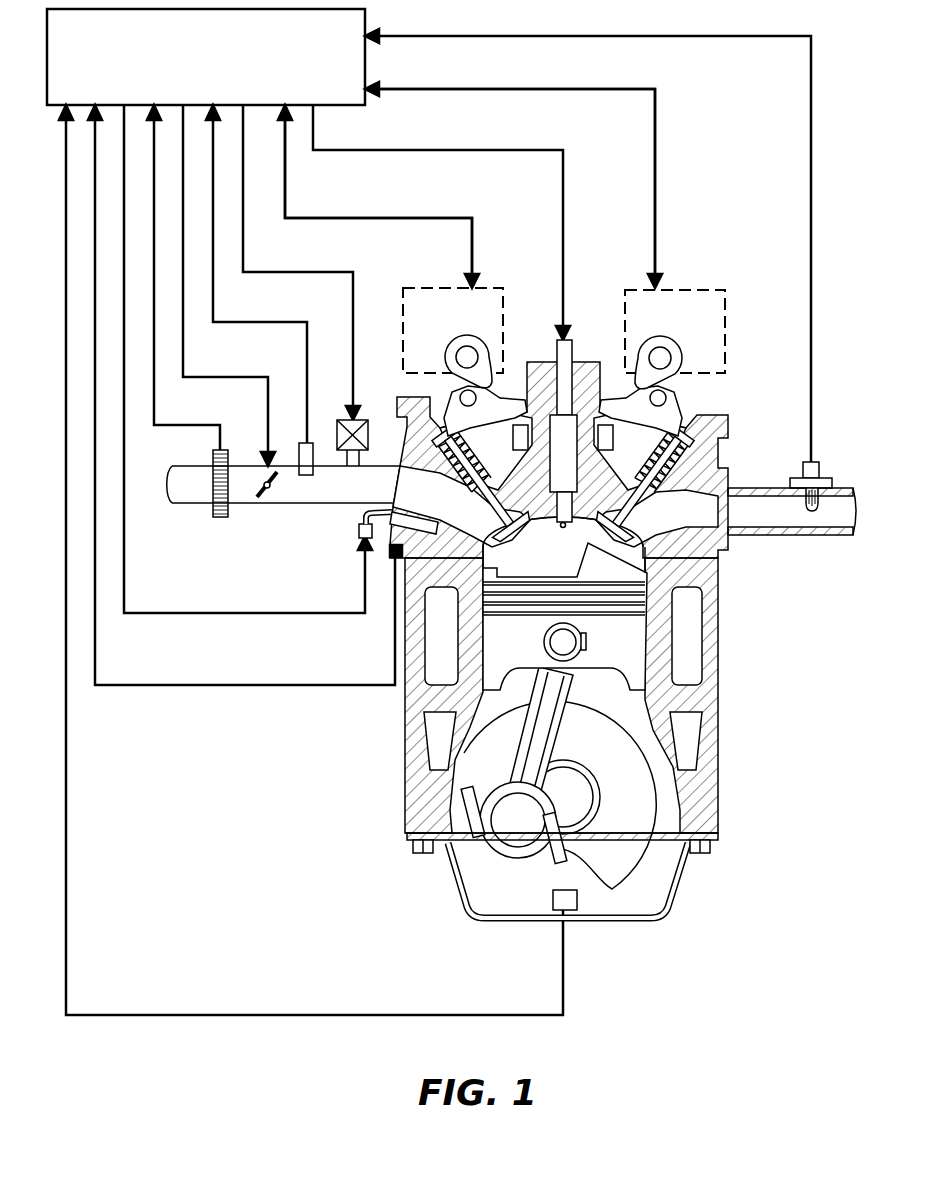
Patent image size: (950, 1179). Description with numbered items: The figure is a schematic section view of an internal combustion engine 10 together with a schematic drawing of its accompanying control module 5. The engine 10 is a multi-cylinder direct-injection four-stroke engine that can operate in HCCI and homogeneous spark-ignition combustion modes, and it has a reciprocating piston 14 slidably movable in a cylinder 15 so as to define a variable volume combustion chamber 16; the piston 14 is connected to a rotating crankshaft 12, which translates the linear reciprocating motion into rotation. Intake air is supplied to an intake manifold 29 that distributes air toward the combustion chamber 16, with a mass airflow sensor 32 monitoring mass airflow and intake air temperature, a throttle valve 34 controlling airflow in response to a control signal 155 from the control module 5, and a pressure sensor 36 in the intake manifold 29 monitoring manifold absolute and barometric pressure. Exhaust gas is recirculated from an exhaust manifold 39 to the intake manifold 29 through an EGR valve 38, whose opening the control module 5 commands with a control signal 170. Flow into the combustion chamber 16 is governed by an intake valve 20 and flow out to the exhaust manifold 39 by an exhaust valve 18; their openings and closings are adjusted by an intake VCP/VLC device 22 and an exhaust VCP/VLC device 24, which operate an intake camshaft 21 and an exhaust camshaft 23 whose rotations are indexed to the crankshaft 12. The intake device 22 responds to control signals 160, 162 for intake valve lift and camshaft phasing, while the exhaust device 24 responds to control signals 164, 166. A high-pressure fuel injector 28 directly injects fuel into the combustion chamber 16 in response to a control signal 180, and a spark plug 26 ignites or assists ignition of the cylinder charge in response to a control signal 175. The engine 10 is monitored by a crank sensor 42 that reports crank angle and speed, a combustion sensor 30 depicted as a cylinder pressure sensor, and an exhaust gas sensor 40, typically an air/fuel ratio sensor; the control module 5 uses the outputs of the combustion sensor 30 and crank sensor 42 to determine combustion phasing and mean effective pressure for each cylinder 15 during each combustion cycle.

The control module 5 is at (212, 70).
The internal combustion engine 10 is at (511, 589).
The crankshaft 12 is at (620, 850).
The piston 14 is at (624, 654).
The cylinder 15 is at (655, 579).
The combustion chamber 16 is at (538, 564).
The exhaust valve 18 is at (630, 525).
The intake valve 20 is at (480, 512).
The intake camshaft 21 is at (470, 357).
The intake variable cam phasing/variable lift control device 22 is at (445, 326).
The exhaust camshaft 23 is at (662, 358).
The exhaust variable cam phasing/variable lift control device 24 is at (710, 326).
The spark plug 26 is at (568, 340).
The fuel injector 28 is at (357, 528).
The intake manifold 29 is at (380, 472).
The combustion sensor 30 is at (392, 560).
The mass airflow sensor 32 is at (220, 518).
The throttle valve 34 is at (264, 497).
The pressure sensor 36 is at (306, 478).
The exhaust gas recirculation valve 38 is at (343, 453).
The exhaust manifold 39 is at (760, 488).
The exhaust gas sensor 40 is at (820, 472).
The crank sensor 42 is at (553, 905).
The control signal 155 is at (247, 374).
The control signal 160 is at (457, 216).
The control signal 162 is at (378, 197).
The control signal 164 is at (634, 86).
The control signal 166 is at (516, 171).
The control signal 170 is at (322, 266).
The control signal 175 is at (502, 144).
The control signal 180 is at (270, 611).